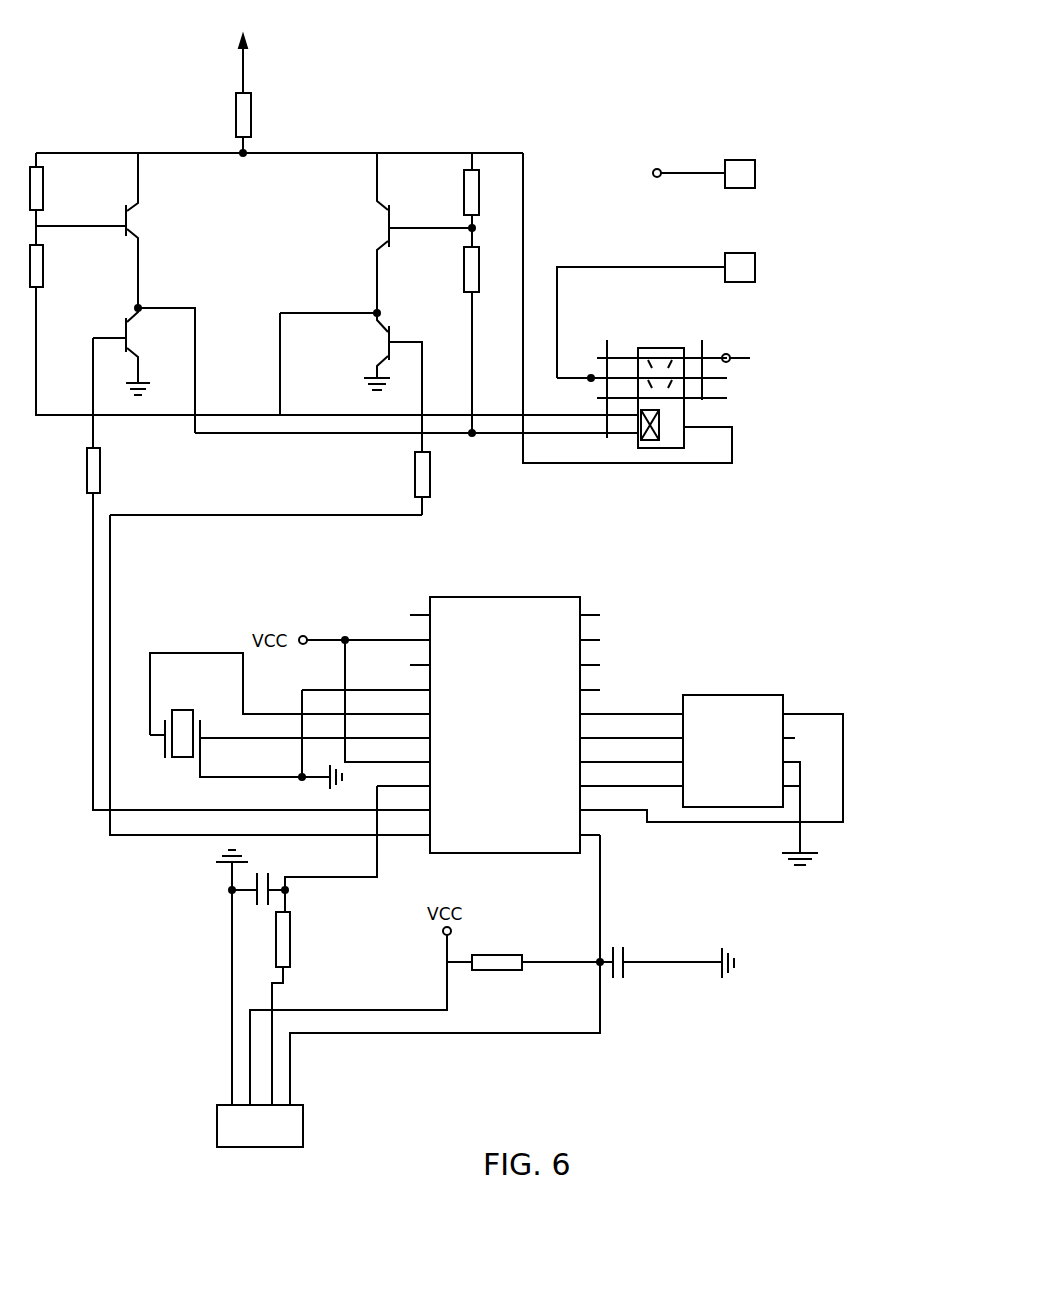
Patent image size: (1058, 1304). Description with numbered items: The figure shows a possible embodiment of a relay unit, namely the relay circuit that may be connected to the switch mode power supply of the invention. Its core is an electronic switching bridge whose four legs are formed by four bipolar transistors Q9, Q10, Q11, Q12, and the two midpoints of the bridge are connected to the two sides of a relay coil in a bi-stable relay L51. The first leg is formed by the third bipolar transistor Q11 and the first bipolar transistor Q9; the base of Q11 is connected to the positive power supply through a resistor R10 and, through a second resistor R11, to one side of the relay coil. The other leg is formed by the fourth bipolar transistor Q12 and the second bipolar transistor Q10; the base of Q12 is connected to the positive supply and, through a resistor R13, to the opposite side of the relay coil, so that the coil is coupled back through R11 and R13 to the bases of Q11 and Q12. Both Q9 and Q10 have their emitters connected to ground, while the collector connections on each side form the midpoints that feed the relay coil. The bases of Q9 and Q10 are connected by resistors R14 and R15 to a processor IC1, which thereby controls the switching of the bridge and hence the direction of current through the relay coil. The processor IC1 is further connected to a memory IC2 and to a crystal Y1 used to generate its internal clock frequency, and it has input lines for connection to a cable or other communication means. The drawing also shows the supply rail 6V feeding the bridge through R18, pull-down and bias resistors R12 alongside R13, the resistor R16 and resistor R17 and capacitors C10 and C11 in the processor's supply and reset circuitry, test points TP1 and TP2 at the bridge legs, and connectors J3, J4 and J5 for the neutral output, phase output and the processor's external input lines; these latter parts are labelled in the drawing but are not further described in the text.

The 6V supply 6V is at (245, 53).
The resistor 0R R18 is at (265, 123).
The resistor R10 is at (64, 188).
The second resistor R11 is at (59, 266).
The resistor 100K R12 is at (496, 200).
The resistor R13 is at (491, 340).
The resistor R14 is at (258, 574).
The resistor R15 is at (445, 483).
The resistor 10K R16 is at (303, 1008).
The resistor 100K R17 is at (530, 940).
The first bipolar transistor Q9 is at (166, 351).
The second bipolar transistor Q10 is at (359, 382).
The third bipolar transistor Q11 is at (173, 230).
The fourth bipolar transistor Q12 is at (369, 233).
The test point 1 TP1 is at (165, 359).
The test point 2 TP2 is at (329, 302).
The connector CON1 neutral out J3 is at (695, 177).
The connector CON1 phase out J4 is at (694, 303).
The connector CON4 J5 is at (260, 1146).
The bi-stable relay L51 is at (682, 409).
The processor IC1 is at (504, 723).
The memory IC2 is at (709, 756).
The crystal Y1 is at (290, 715).
The capacitor 10n C10 is at (259, 895).
The capacitor 100nF C11 is at (669, 962).